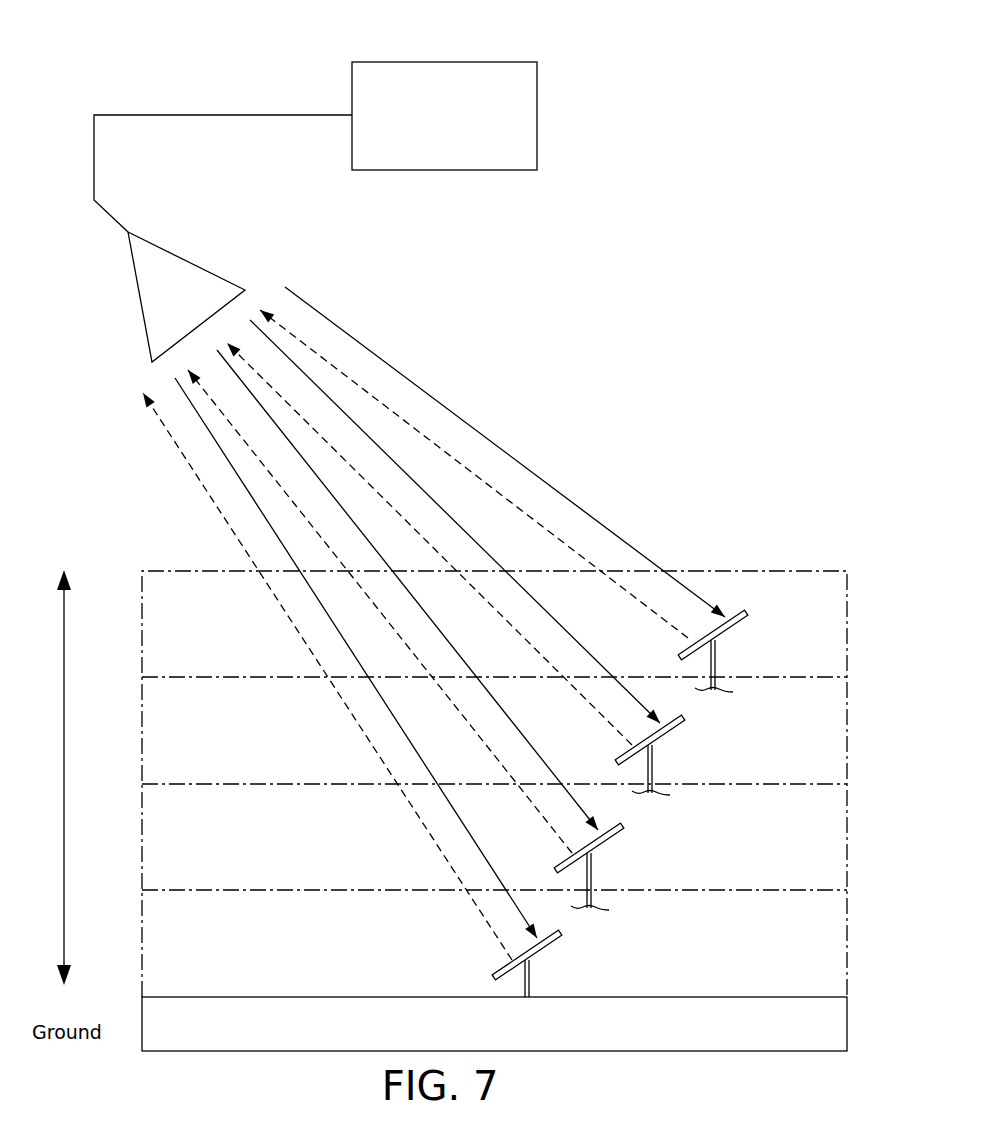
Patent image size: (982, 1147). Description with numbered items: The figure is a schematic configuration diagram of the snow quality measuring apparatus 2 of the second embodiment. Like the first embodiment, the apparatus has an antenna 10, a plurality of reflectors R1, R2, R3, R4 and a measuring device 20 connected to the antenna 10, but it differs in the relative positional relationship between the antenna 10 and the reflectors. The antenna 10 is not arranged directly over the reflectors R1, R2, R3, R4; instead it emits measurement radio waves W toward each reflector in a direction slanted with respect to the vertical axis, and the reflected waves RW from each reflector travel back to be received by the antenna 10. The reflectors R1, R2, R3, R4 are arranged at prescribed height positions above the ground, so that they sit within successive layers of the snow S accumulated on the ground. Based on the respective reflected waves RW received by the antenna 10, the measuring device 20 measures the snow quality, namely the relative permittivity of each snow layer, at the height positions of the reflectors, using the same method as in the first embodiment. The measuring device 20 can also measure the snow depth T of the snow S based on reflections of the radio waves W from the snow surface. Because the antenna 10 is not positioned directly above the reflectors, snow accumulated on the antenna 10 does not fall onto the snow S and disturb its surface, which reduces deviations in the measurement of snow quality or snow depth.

The snow quality measuring apparatus 2 is at (657, 220).
The antenna 10 is at (193, 262).
The measuring device 20 is at (498, 60).
The radio waves W is at (455, 410).
The reflected waves RW is at (205, 493).
The snow S is at (820, 571).
The snow depth T is at (47, 777).
The reflector R1 is at (555, 944).
The reflector R2 is at (617, 838).
The reflector R3 is at (678, 732).
The reflector R4 is at (740, 623).